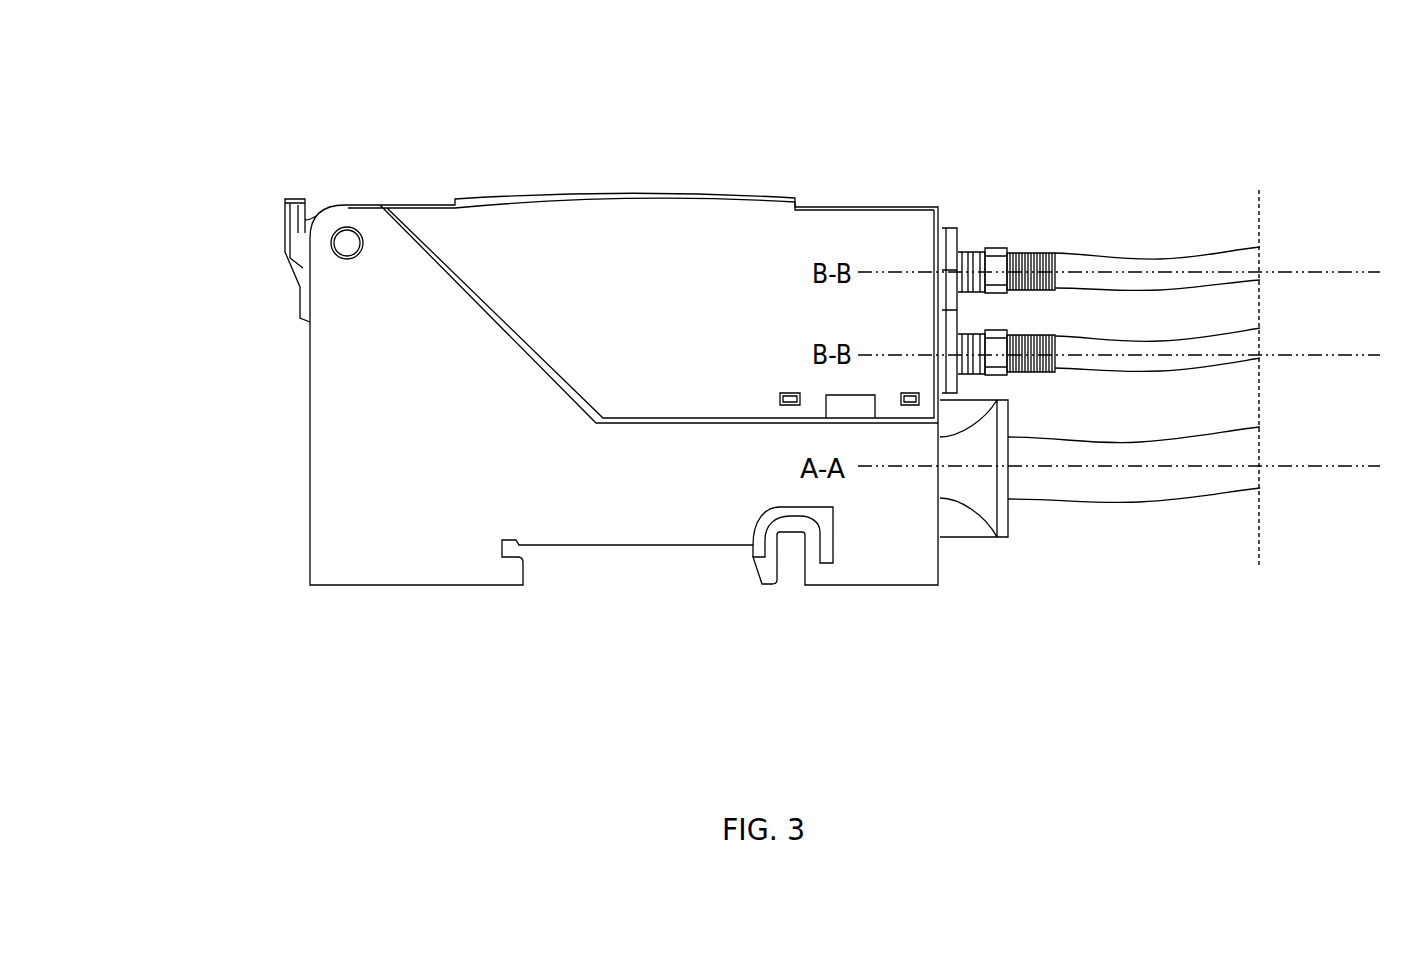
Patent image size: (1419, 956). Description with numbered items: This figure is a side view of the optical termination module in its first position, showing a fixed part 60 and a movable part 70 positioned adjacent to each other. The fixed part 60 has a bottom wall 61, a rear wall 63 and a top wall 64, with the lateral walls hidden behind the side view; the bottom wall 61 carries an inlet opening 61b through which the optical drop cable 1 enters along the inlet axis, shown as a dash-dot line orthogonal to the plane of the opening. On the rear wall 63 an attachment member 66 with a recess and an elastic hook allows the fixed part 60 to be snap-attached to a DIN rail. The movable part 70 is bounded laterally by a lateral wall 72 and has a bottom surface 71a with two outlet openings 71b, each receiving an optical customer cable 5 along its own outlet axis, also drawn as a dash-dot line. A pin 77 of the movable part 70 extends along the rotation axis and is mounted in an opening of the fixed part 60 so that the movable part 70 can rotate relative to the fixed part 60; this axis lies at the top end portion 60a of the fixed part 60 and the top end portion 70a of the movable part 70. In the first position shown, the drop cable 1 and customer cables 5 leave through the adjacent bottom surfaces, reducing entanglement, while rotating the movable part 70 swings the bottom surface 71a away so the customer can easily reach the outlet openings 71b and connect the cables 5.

The optical drop cable 1 is at (1143, 483).
The optical customer cable 5 is at (1160, 350).
The fixed part 60 is at (476, 465).
The end portion of the fixed part 60a is at (309, 435).
The bottom wall 61 is at (942, 560).
The inlet opening 61b is at (1008, 476).
The rear wall 63 is at (478, 588).
The top wall 64 is at (306, 562).
The attachment member 66 is at (647, 557).
The movable part 70 is at (674, 295).
The end portion of the movable part 70a is at (308, 247).
The bottom surface 71a is at (938, 218).
The outlet opening 71b is at (942, 335).
The lateral wall 72 is at (505, 228).
The pin 77 is at (347, 258).